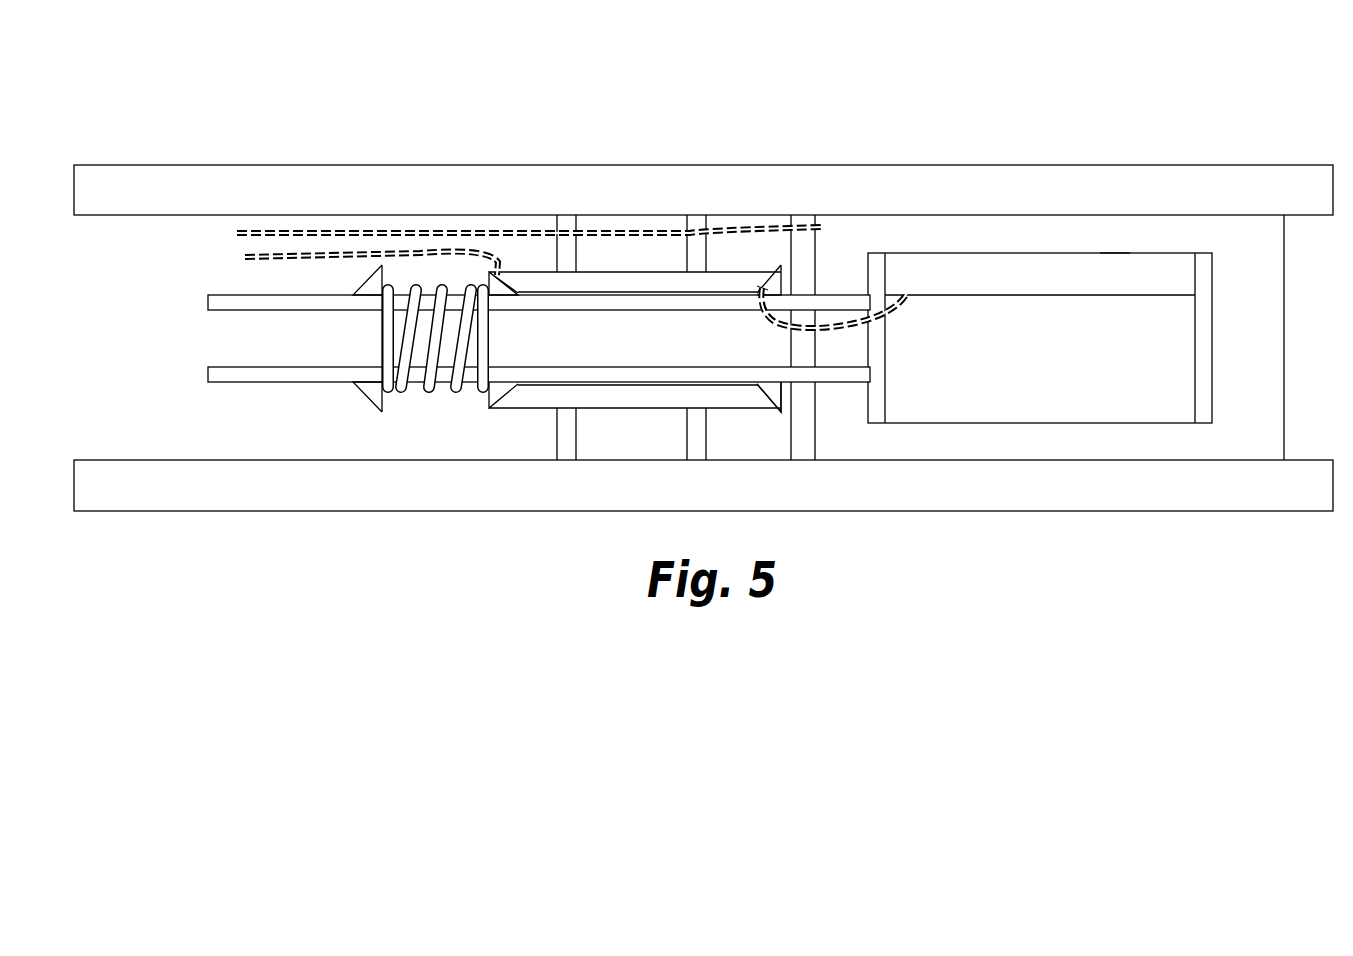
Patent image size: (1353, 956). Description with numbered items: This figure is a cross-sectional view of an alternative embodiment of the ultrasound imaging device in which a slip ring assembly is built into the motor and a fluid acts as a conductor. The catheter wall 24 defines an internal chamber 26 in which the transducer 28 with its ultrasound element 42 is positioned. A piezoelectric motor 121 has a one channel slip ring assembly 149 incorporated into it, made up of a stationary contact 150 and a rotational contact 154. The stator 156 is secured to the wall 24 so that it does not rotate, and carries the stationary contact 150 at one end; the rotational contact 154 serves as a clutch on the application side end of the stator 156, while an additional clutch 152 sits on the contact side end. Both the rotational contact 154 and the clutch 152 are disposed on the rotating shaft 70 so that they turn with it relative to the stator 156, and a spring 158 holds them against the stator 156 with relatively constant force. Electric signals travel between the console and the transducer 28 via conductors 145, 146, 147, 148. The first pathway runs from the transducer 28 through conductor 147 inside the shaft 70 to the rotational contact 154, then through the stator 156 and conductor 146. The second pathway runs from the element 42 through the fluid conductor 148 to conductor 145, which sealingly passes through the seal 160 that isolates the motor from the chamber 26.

The wall 24 is at (692, 188).
The internal chamber 26 is at (1253, 250).
The transducer 28 is at (1116, 235).
The ultrasound element 42 is at (1050, 275).
The rotating shaft 70 is at (241, 375).
The piezoelectric motor 121 is at (546, 251).
The conductor 145 is at (302, 229).
The conductor 146 is at (259, 254).
The conductor 147 is at (843, 328).
The fluid conductor 148 is at (1007, 246).
The slip ring assembly 149 is at (775, 438).
The stationary contact 150 is at (757, 288).
The clutch 152 is at (495, 283).
The rotational contact 154 is at (773, 287).
The stator 156 is at (605, 392).
The spring 158 is at (418, 353).
The seal 160 is at (803, 438).